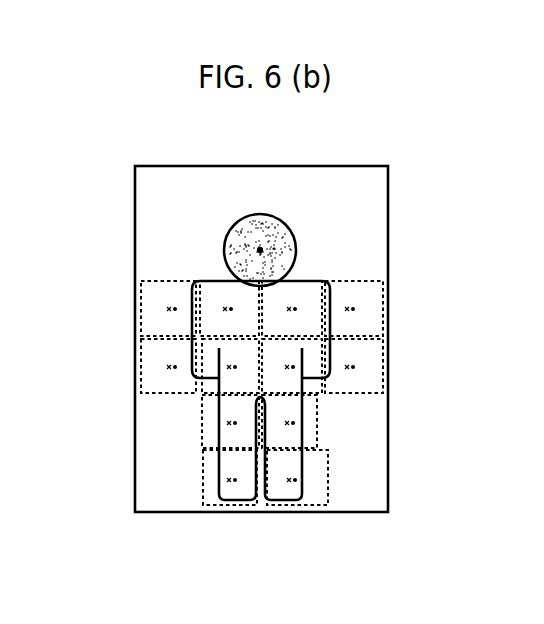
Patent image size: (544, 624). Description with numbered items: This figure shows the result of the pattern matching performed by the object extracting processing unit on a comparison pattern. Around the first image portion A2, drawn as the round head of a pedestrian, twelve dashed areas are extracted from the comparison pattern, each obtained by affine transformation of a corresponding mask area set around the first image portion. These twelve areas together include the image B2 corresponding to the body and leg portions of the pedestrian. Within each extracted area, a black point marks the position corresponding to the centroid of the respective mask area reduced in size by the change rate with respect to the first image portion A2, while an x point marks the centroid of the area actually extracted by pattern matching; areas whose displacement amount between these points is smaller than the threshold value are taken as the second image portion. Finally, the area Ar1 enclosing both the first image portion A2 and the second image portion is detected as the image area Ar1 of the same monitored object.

The image of the body and leg portions of the pedestrian B2 is at (202, 376).
The first image portion A2 is at (264, 215).
The image area of the monitored object Ar1 is at (353, 512).